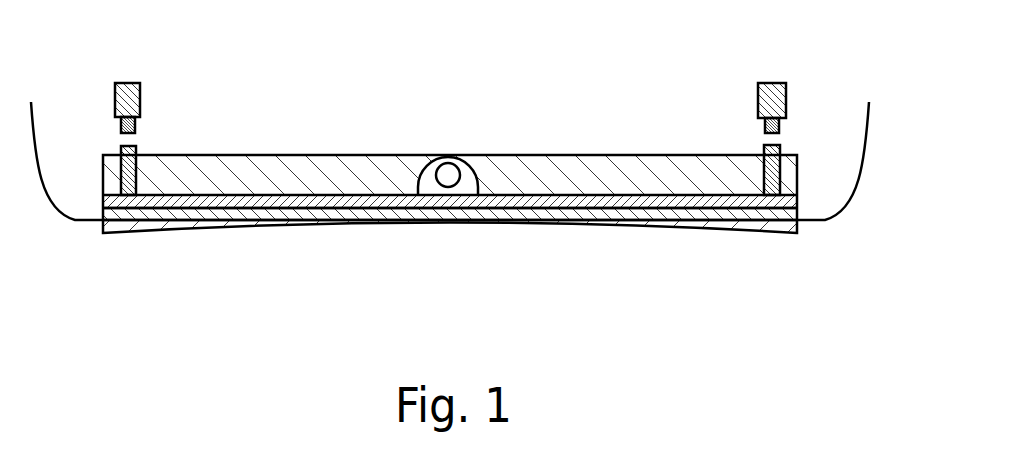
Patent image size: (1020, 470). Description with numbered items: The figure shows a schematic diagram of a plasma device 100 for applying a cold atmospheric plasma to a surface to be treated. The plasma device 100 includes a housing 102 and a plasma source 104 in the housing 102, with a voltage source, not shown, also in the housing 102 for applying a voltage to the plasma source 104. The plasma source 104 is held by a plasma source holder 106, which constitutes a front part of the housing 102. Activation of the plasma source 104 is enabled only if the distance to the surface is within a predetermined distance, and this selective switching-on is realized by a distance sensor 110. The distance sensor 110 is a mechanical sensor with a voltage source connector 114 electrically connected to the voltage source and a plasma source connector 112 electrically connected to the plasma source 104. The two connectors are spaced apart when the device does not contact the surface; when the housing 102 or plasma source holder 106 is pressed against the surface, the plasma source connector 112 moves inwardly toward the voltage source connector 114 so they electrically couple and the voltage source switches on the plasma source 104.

The plasma device 100 is at (476, 172).
The housing 102 is at (52, 205).
The plasma source 104 is at (717, 233).
The plasma source holder 106 is at (138, 212).
The distance sensor 110 is at (677, 92).
The plasma source connector 112 is at (135, 166).
The voltage source connector 114 is at (133, 86).